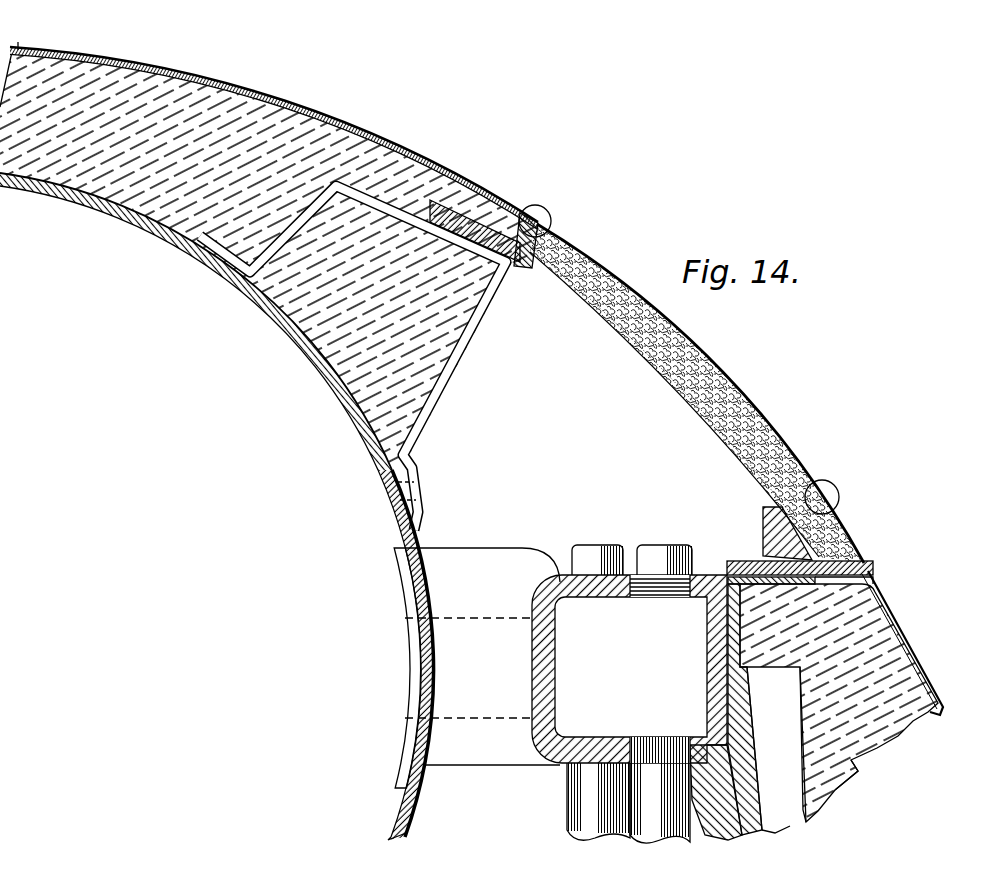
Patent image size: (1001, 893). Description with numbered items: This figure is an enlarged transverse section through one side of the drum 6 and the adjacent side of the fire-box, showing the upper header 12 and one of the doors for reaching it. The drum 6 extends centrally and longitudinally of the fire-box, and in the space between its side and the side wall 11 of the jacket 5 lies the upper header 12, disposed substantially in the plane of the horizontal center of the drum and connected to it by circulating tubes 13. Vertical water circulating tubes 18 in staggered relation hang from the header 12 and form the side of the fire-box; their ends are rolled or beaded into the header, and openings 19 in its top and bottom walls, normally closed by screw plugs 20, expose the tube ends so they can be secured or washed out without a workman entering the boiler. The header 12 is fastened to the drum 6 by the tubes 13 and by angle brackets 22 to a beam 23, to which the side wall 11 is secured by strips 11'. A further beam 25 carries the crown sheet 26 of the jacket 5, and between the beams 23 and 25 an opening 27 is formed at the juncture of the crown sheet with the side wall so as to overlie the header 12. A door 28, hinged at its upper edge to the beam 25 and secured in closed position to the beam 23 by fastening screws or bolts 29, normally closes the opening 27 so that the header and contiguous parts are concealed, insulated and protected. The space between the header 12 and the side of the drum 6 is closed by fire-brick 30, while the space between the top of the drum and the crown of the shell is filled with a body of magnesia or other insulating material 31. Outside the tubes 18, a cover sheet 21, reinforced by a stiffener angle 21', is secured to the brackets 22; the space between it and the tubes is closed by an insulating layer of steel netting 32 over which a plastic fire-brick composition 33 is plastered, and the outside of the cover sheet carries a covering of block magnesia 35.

The jacket 5 is at (192, 78).
The insulating material 31 is at (250, 99).
The crown sheet 26 is at (323, 120).
The beam 25 is at (498, 197).
The fastening screw or bolt 29 is at (458, 364).
The door 28 is at (690, 362).
The opening 27 is at (570, 425).
The fire-brick 30 is at (492, 558).
The screw plug 20 is at (648, 553).
The opening 19 is at (711, 588).
The upper header 12 is at (624, 660).
The vertical water circulating tube 18 is at (643, 794).
The circulating tube 13 is at (490, 716).
The drum 6 is at (400, 800).
The beam 23 is at (872, 566).
The angle bracket 22 is at (745, 599).
The side wall 11 is at (845, 703).
The strip 11' is at (926, 643).
The block magnesia covering 35 is at (865, 762).
The cover sheet 21 is at (800, 709).
The stiffener angle 21' is at (776, 748).
The steel netting 32 is at (726, 836).
The plastic fire-brick composition 33 is at (778, 832).